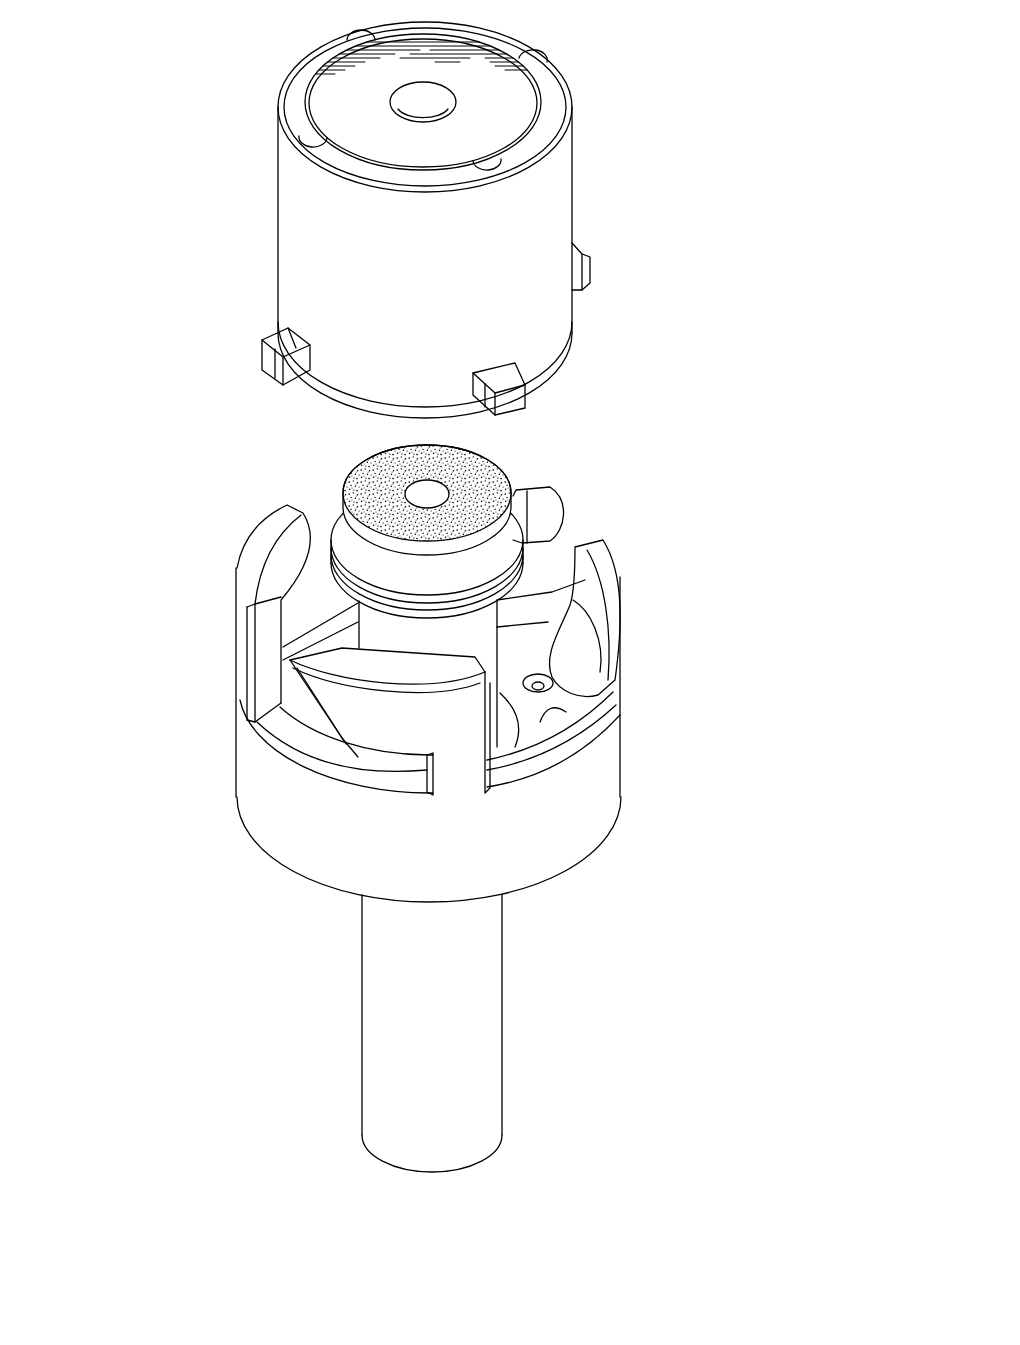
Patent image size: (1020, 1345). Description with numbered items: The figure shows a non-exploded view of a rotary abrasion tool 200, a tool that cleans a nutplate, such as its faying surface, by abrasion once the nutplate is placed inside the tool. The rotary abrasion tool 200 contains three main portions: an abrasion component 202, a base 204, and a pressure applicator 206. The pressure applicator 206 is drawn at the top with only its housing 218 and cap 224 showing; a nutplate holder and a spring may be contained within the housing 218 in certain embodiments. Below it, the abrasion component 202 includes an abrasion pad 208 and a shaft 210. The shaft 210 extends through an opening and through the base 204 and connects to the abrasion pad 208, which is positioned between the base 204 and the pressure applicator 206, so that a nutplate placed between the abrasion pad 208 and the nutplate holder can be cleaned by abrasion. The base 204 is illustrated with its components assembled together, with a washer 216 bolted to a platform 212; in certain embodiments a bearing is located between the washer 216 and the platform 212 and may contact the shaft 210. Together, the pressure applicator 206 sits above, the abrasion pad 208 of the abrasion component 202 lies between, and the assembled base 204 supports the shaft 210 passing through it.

The rotary abrasion tool 200 is at (743, 124).
The abrasion component 202 is at (465, 443).
The base 204 is at (355, 900).
The pressure applicator 206 is at (345, 23).
The abrasion pad 208 is at (490, 496).
The shaft 210 is at (477, 638).
The platform 212 is at (563, 796).
The washer 216 is at (540, 722).
The housing 218 is at (538, 210).
The cap 224 is at (500, 93).